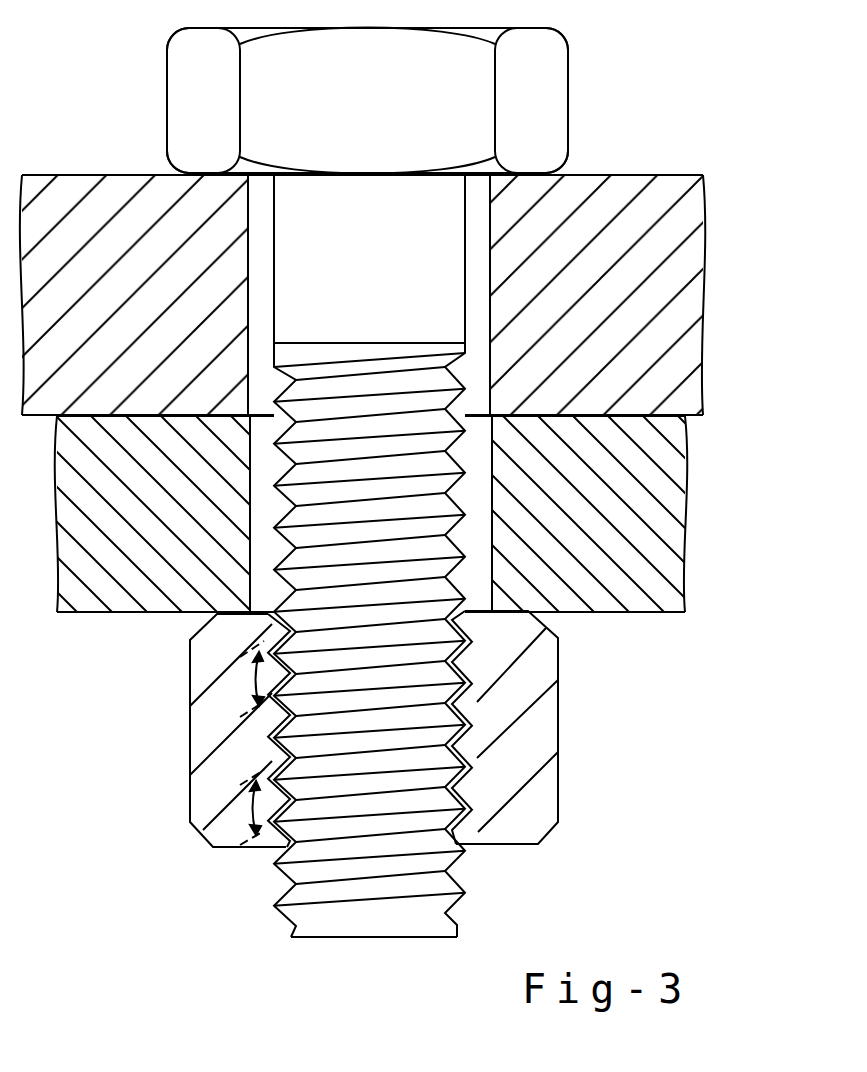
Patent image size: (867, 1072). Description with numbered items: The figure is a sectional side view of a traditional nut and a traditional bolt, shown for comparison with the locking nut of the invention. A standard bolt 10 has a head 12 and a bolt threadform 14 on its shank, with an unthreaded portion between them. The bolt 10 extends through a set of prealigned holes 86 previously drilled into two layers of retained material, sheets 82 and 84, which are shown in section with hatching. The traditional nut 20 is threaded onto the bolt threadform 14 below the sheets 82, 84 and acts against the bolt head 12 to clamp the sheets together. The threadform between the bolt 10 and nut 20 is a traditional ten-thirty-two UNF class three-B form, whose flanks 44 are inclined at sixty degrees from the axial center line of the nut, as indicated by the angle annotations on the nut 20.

The bolt 10 is at (385, 513).
The head 12 is at (437, 173).
The bolt threadform 14 is at (350, 843).
The nut 20 is at (185, 795).
The flanks 44 is at (490, 753).
The sheet of material 82 is at (660, 337).
The sheet of material 84 is at (630, 538).
The prealigned holes 86 is at (260, 332).